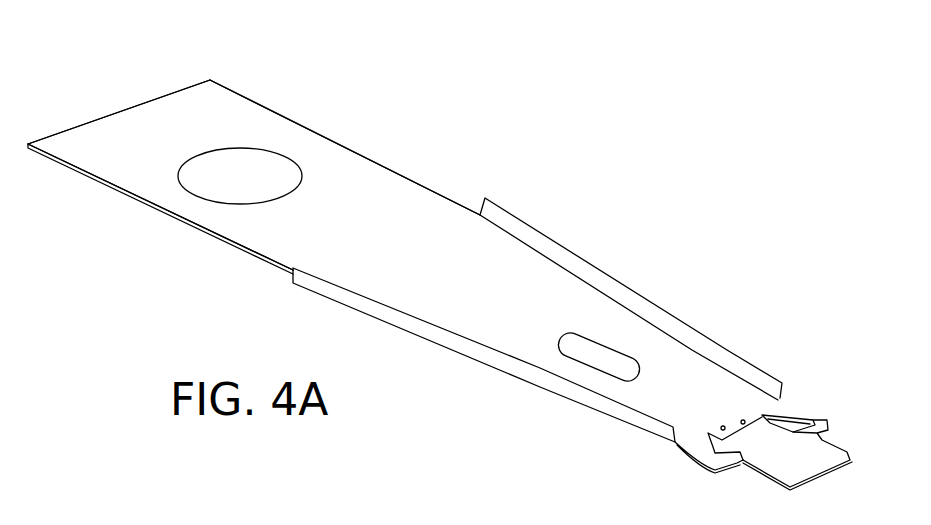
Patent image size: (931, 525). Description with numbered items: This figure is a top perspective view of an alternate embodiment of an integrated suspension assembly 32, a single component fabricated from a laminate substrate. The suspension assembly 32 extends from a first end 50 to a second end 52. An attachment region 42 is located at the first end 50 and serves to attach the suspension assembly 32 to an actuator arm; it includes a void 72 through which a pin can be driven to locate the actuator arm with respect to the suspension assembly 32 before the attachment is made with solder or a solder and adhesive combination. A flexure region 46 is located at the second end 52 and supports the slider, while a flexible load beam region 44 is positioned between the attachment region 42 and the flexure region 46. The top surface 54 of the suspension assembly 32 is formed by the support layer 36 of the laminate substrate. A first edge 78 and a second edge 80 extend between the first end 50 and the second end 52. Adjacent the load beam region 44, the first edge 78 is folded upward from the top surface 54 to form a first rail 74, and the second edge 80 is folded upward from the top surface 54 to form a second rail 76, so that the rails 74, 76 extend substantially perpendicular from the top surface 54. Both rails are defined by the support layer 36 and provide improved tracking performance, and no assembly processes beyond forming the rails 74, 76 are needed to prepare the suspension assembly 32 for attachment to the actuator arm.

The suspension assembly 32 is at (132, 76).
The first end 50 is at (97, 118).
The attachment region 42 is at (223, 107).
The void 72 is at (222, 180).
The second edge 80 is at (227, 252).
The first edge 78 is at (382, 165).
The top surface 54 is at (395, 220).
The first rail 74 is at (528, 238).
The load beam region 44 is at (565, 295).
The second rail 76 is at (377, 310).
The support layer 36 is at (785, 420).
The flexure region 46 is at (780, 447).
The second end 52 is at (817, 477).